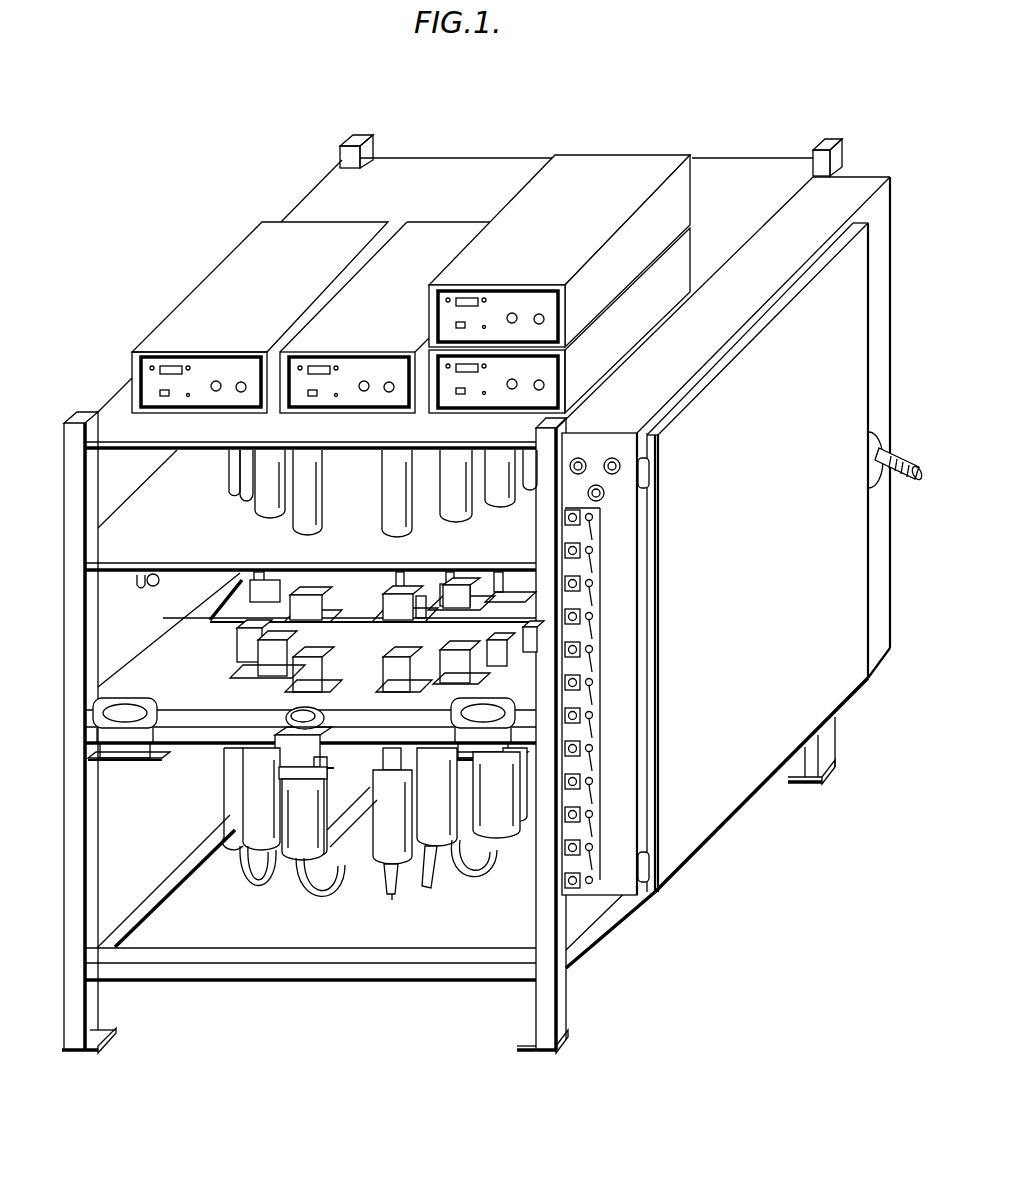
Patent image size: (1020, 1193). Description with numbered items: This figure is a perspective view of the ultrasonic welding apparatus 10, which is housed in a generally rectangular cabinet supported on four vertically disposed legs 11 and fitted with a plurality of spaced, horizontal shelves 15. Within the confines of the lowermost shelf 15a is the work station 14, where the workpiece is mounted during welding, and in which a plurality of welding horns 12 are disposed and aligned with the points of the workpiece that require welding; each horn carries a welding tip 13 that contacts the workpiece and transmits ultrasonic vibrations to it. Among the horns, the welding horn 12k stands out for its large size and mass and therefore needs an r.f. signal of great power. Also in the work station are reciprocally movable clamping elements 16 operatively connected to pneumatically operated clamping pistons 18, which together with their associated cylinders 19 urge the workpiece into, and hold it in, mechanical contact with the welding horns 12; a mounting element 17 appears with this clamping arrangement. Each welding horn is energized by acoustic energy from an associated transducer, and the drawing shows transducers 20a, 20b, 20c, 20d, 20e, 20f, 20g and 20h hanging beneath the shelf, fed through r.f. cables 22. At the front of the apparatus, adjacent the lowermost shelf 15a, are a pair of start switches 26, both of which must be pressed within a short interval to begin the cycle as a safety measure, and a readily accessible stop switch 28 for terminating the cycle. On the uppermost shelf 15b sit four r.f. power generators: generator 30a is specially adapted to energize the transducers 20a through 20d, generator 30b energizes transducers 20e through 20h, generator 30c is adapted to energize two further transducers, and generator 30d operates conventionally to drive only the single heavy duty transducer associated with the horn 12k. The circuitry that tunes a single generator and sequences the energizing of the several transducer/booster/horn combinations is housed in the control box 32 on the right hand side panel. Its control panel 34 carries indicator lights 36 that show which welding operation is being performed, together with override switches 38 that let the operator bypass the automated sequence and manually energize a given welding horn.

The ultrasonic welding apparatus 10 is at (697, 107).
The legs 11 is at (351, 135).
The welding horns 12 is at (290, 662).
The welding horn 12k is at (421, 600).
The welding tips 13 is at (306, 657).
The work station 14 is at (198, 632).
The shelves 15 is at (160, 542).
The lowermost shelf 15a is at (175, 680).
The uppermost shelf 15b is at (115, 417).
The clamping elements 16 is at (297, 605).
The mounting plates 17 is at (292, 620).
The clamping pistons 18 is at (300, 577).
The cylinders 19 is at (244, 489).
The transducer 20a is at (233, 785).
The transducer 20b is at (238, 810).
The transducer 20c is at (447, 847).
The transducer 20d is at (527, 777).
The transducer 20e is at (250, 866).
The transducer 20f is at (313, 853).
The transducer 20g is at (393, 852).
The transducer 20h is at (538, 869).
The r.f. cables 22 is at (248, 845).
The start switches 26 is at (140, 706).
The stop switch 28 is at (311, 712).
The r.f. power generator 30a is at (640, 270).
The r.f. power generator 30b is at (640, 326).
The r.f. power generator 30c is at (394, 310).
The r.f. power generator 30d is at (262, 308).
The control box 32 is at (758, 558).
The control panel 34 is at (616, 890).
The lights 36 is at (593, 530).
The override switches 38 is at (598, 513).